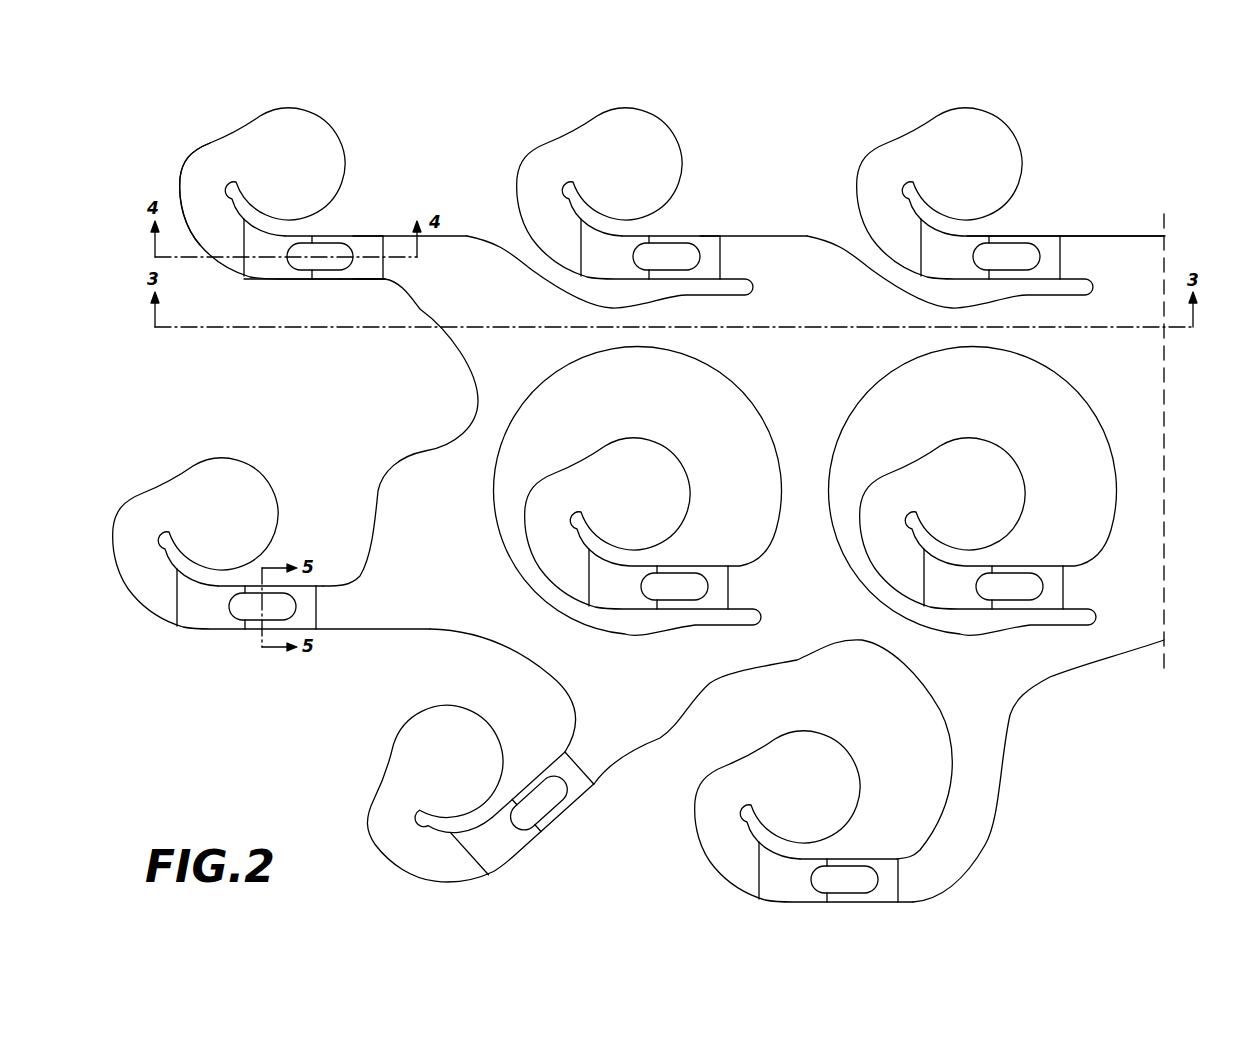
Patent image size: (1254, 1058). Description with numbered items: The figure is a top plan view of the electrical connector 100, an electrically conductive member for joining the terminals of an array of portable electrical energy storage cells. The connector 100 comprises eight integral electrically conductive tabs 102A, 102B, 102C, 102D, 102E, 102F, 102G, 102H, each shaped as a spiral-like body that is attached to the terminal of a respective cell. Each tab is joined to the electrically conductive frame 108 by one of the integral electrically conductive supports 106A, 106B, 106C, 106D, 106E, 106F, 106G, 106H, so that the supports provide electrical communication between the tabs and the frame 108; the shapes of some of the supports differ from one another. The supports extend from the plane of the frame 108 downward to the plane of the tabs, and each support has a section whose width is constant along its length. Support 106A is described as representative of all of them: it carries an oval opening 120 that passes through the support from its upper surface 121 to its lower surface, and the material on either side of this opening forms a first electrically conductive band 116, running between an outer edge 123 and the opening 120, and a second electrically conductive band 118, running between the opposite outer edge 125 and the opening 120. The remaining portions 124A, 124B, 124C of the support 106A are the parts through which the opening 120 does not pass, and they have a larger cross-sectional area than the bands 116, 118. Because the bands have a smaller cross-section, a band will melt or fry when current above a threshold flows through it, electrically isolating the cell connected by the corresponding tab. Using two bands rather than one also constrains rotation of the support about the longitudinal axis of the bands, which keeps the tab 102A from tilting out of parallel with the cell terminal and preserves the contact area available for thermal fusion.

The electrical connector 100 is at (1163, 124).
The integral electrically conductive tab 102A is at (272, 133).
The integral electrically conductive tab 102B is at (605, 133).
The integral electrically conductive tab 102C is at (948, 133).
The integral electrically conductive tab 102D is at (205, 487).
The integral electrically conductive tab 102E is at (628, 458).
The integral electrically conductive tab 102F is at (953, 459).
The integral electrically conductive tab 102G is at (425, 733).
The integral electrically conductive tab 102H is at (787, 757).
The integral electrically conductive support 106A is at (348, 228).
The integral electrically conductive support 106B is at (690, 228).
The integral electrically conductive support 106C is at (1030, 228).
The integral electrically conductive support 106D is at (238, 633).
The integral electrically conductive support 106E is at (690, 560).
The integral electrically conductive support 106F is at (1027, 560).
The integral electrically conductive support 106G is at (560, 826).
The integral electrically conductive support 106H is at (859, 855).
The electrically conductive frame 108 is at (1137, 385).
The first electrically conductive band 116 is at (316, 244).
The second electrically conductive band 118 is at (328, 273).
The opening 120 is at (660, 258).
The upper surface 121 is at (705, 245).
The edge 123 is at (367, 237).
The portion 124A is at (200, 207).
The portion 124B is at (263, 270).
The portion 124C is at (370, 268).
The edge 125 is at (343, 281).